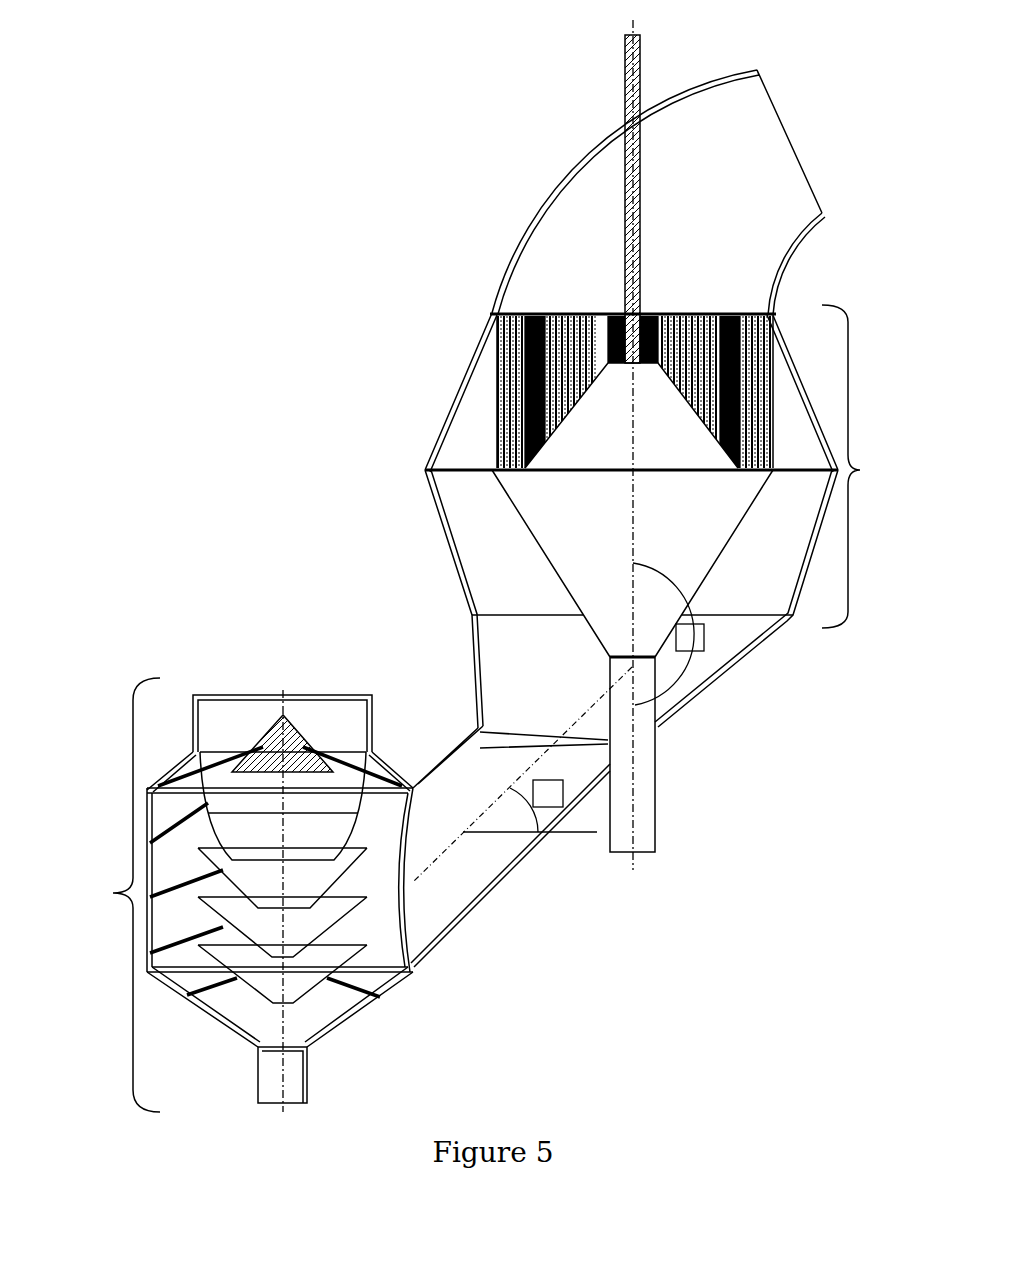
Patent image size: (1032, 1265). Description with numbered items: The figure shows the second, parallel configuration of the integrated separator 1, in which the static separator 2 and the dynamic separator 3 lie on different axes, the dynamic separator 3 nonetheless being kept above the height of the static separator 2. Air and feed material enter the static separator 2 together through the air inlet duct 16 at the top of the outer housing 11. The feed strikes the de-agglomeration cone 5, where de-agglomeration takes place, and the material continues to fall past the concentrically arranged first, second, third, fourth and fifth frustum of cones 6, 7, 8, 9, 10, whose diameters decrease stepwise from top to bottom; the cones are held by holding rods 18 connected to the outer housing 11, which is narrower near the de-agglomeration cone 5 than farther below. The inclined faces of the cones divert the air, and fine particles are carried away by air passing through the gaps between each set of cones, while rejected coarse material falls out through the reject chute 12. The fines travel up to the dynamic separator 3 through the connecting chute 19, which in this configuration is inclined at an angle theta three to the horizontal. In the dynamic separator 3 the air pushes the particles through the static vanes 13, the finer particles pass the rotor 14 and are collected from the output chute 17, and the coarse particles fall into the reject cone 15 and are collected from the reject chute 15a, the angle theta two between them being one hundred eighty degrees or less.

The integrated separator 1 is at (193, 75).
The static separator 2 is at (330, 849).
The dynamic separator 3 is at (619, 445).
The de-agglomeration cone 5 is at (286, 728).
The first frustum of cone 6 is at (343, 790).
The second frustum of cone 7 is at (333, 833).
The third frustum of cone 8 is at (325, 875).
The fourth frustum of cone 9 is at (325, 922).
The fifth frustum of cone 10 is at (325, 960).
The outer housing 11 is at (148, 788).
The reject chute 12 is at (307, 1078).
The static vanes 13 is at (493, 378).
The rotor 14 is at (625, 233).
The reject cone 15 is at (520, 510).
The reject chute 15a is at (648, 790).
The air inlet duct 16 is at (192, 712).
The output chute 17 is at (720, 232).
The holding rod 18 is at (173, 828).
The connecting chute 19 is at (475, 857).